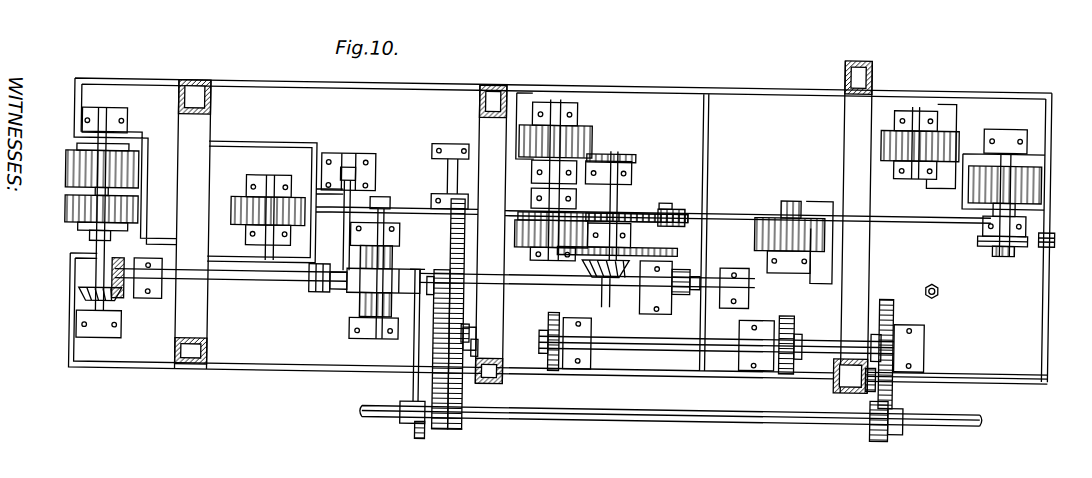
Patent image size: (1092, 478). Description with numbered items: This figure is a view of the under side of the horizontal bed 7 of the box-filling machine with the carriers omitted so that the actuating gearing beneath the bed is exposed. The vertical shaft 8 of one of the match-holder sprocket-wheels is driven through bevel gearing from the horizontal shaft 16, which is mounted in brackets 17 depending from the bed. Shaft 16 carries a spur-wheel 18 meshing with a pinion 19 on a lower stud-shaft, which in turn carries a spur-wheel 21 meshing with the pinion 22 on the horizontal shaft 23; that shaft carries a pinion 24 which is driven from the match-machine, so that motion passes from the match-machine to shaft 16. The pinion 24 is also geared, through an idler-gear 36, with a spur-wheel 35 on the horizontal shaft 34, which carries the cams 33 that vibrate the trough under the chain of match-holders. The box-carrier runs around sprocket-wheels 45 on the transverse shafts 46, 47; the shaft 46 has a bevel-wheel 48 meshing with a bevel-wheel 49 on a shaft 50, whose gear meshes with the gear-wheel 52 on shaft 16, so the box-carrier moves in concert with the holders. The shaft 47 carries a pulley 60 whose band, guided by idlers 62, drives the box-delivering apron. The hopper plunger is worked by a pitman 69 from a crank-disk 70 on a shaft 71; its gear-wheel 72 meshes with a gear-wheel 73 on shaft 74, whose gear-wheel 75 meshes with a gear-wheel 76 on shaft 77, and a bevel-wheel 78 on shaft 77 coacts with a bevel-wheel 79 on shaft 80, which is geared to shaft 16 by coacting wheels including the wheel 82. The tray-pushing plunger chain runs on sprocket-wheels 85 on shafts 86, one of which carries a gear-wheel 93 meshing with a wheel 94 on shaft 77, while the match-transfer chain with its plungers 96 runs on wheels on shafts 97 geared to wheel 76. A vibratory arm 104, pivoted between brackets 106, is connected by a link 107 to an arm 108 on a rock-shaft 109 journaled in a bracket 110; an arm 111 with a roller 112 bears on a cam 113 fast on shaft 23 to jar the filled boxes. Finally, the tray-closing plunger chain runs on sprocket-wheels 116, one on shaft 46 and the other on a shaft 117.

The horizontal bed 7 is at (233, 356).
The vertical shaft 8 is at (943, 277).
The horizontal shaft 16 is at (573, 280).
The bracket 17 is at (483, 296).
The spur-wheel 18 is at (455, 222).
The pinion 19 is at (460, 372).
The spur-wheel 21 is at (438, 350).
The pinion 22 is at (445, 421).
The horizontal shaft 23 is at (793, 412).
The pinion 24 is at (893, 427).
The cam 33 is at (553, 306).
The horizontal shaft 34 is at (665, 343).
The spur-wheel 35 is at (888, 287).
The idler-gear 36 is at (913, 380).
The sprocket-wheel 45 is at (68, 163).
The transverse shaft 46 is at (97, 265).
The transverse shaft 47 is at (1007, 146).
The bevel-wheel 48 is at (88, 295).
The bevel-wheel 49 is at (123, 294).
The shaft 50 is at (260, 282).
The gear-wheel 52 is at (317, 293).
The pulley 60 is at (982, 226).
The idler 62 is at (1058, 230).
The pitman 69 is at (890, 203).
The crank-disk 70 is at (673, 211).
The shaft 71 is at (682, 219).
The gear-wheel 72 is at (680, 241).
The gear-wheel 73 is at (678, 243).
The shaft 74 is at (648, 218).
The gear-wheel 75 is at (643, 221).
The gear-wheel 76 is at (620, 204).
The shaft 77 is at (617, 189).
The bevel-wheel 78 is at (607, 264).
The bevel-wheel 79 is at (627, 294).
The shaft 80 is at (712, 285).
The gear-wheel 82 is at (683, 294).
The sprocket-wheel 85 is at (593, 119).
The shaft 86 is at (555, 92).
The gear-wheel 93 is at (517, 148).
The gear-wheel 94 is at (630, 144).
The reciprocable plunger 96 is at (762, 183).
The shaft 97 is at (535, 190).
The vibratory arm 104 is at (398, 157).
The bracket 106 is at (440, 153).
The link 107 is at (352, 163).
The arm 108 is at (348, 198).
The rock-shaft 109 is at (315, 289).
The bracket 110 is at (397, 248).
The arm 111 is at (417, 377).
The roller 112 is at (420, 417).
The cam 113 is at (427, 432).
The sprocket-wheel 116 is at (68, 210).
The shaft 117 is at (278, 175).